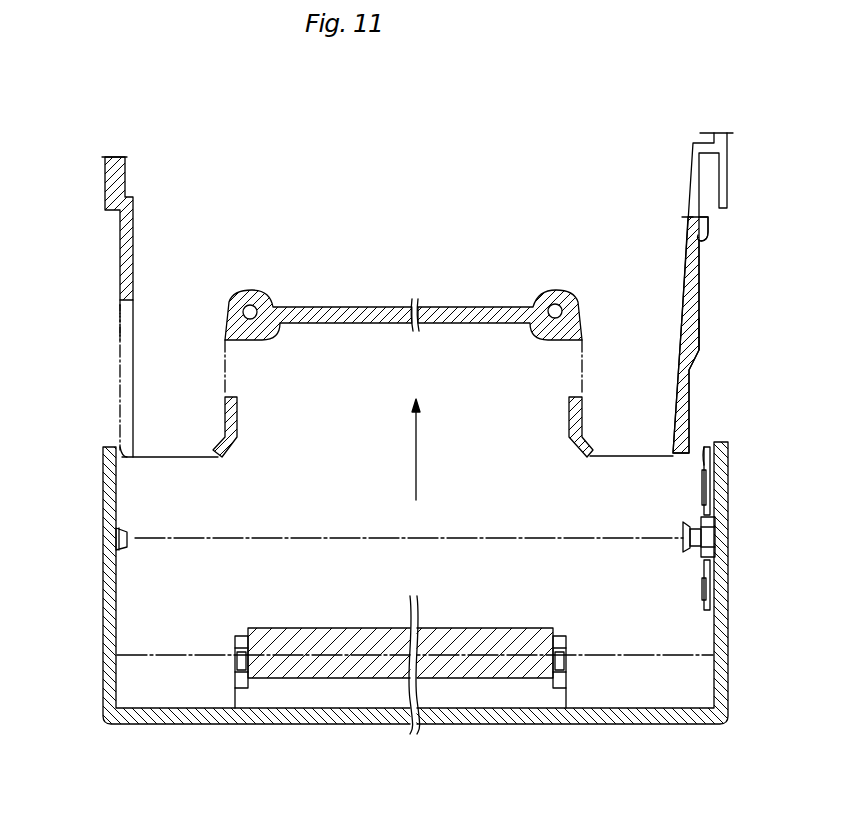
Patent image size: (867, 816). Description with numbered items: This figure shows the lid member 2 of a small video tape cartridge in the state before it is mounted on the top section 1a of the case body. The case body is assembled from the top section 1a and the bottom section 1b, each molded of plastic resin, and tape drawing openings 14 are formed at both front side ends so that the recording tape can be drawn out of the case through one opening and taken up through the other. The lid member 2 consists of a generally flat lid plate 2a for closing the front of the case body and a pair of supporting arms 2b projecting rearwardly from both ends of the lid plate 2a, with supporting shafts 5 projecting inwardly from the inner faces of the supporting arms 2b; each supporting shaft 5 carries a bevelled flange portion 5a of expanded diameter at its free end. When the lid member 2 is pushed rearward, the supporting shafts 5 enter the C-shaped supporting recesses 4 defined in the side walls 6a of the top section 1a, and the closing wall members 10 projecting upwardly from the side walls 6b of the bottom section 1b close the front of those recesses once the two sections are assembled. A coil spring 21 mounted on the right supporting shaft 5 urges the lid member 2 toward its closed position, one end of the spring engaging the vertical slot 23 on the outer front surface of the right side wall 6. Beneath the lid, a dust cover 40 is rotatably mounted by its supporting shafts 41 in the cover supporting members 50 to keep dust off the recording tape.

The top section 1a is at (103, 184).
The bottom section 1b is at (119, 398).
The lid member 2 is at (406, 613).
The lid plate 2a is at (598, 716).
The supporting arms 2b is at (103, 604).
The supporting recesses 4 is at (127, 319).
The supporting shafts 5 is at (124, 528).
The bevelled flange portion 5a is at (128, 549).
The right side wall 6 is at (703, 258).
The side walls of top section 6a is at (124, 244).
The side walls of bottom section 6b is at (134, 371).
The closing wall members 10 is at (118, 338).
The tape drawing openings 14 is at (198, 447).
The coil spring 21 is at (718, 485).
The vertical slot 23 is at (705, 244).
The dust cover 40 is at (330, 628).
The supporting shafts of dust cover 41 is at (240, 660).
The cover supporting members 50 is at (243, 670).